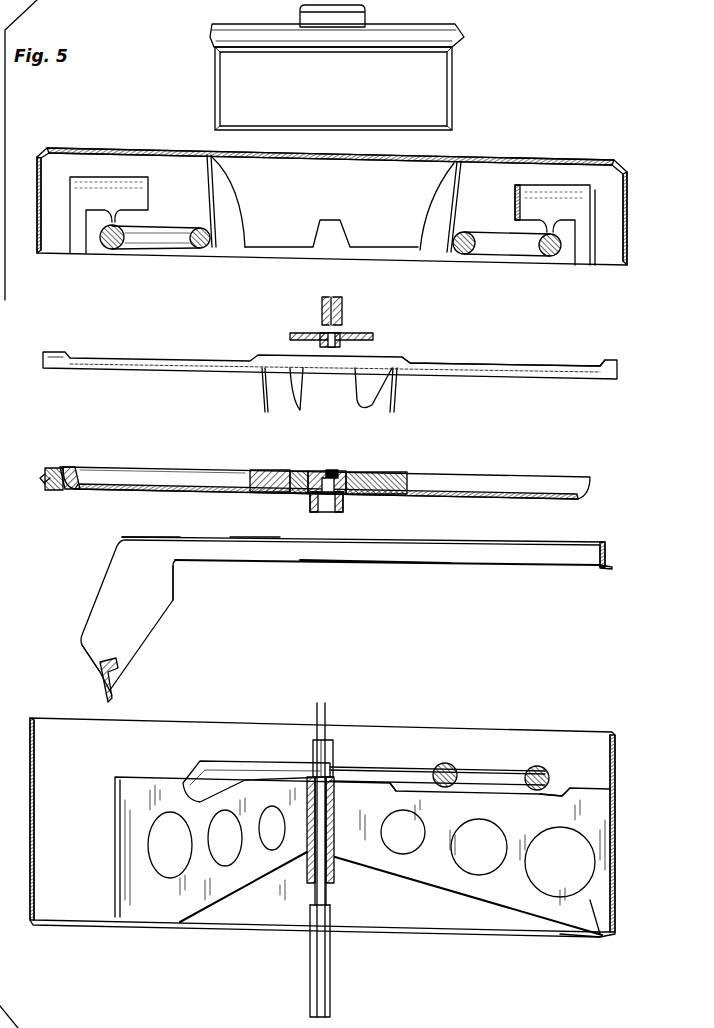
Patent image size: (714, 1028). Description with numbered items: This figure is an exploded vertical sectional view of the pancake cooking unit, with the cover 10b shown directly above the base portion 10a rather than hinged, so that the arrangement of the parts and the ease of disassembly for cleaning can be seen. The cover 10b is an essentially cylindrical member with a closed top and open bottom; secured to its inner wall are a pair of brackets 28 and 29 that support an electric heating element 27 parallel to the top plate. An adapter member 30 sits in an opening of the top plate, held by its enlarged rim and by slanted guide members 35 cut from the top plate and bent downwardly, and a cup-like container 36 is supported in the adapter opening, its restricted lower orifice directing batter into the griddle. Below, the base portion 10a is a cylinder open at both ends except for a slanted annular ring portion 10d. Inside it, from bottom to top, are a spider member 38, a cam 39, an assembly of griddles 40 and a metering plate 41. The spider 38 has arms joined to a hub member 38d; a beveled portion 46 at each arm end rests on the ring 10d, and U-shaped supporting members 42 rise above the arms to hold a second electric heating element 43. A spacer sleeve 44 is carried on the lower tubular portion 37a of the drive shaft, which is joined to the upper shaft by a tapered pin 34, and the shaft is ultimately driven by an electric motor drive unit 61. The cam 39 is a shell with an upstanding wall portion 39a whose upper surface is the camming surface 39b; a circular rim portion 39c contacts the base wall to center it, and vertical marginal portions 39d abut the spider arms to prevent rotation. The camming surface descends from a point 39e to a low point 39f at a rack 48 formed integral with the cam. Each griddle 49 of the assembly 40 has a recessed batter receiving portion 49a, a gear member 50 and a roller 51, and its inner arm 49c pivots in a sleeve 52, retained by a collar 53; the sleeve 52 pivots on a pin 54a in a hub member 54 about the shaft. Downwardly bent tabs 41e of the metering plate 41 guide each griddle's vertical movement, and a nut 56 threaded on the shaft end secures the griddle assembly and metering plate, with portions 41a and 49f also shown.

The cup-like container 36 is at (367, 17).
The adapter member 30 is at (432, 80).
The cover 10b is at (600, 163).
The bracket 28 is at (97, 178).
The electric heating element 27 is at (160, 245).
The guide members 35 is at (240, 185).
The bracket 29 is at (540, 195).
The nut 56 is at (320, 308).
The metering plate 41 is at (612, 368).
The plate portion 41a is at (520, 360).
The downwardly extending tabs 41e is at (292, 392).
The assembly of griddles 40 is at (525, 450).
The roller 51 is at (52, 470).
The gear member 50 is at (68, 468).
The end pin 49f is at (50, 485).
The recessed pancake batter receiving portion 49a is at (165, 446).
The griddle 49 is at (225, 452).
The inner arm 49c is at (270, 470).
The collar 53 is at (298, 493).
The sleeve 52 is at (333, 470).
The hub member 54 is at (365, 472).
The pin 54a is at (312, 500).
The cam 39 is at (115, 598).
The point 39e is at (150, 528).
The camming surface 39b is at (240, 560).
The vertical marginal portions 39d is at (175, 580).
The upstanding wall portion 39a is at (372, 565).
The circular rim portion 39c is at (605, 570).
The low point 39f is at (95, 665).
The rack 48 is at (105, 655).
The base portion 10a is at (34, 790).
The slanted annular ring portion 10d is at (605, 936).
The beveled portion 46 is at (602, 905).
The spider member 38 is at (175, 900).
The hub member 38d is at (340, 782).
The U-shaped supporting members 42 is at (460, 770).
The electric heating element 43 is at (255, 760).
The lower tubular portion 37a is at (330, 975).
The electric motor drive unit 61 is at (312, 740).
The tapered pin 34 is at (334, 905).
The spacer sleeve 44 is at (297, 880).